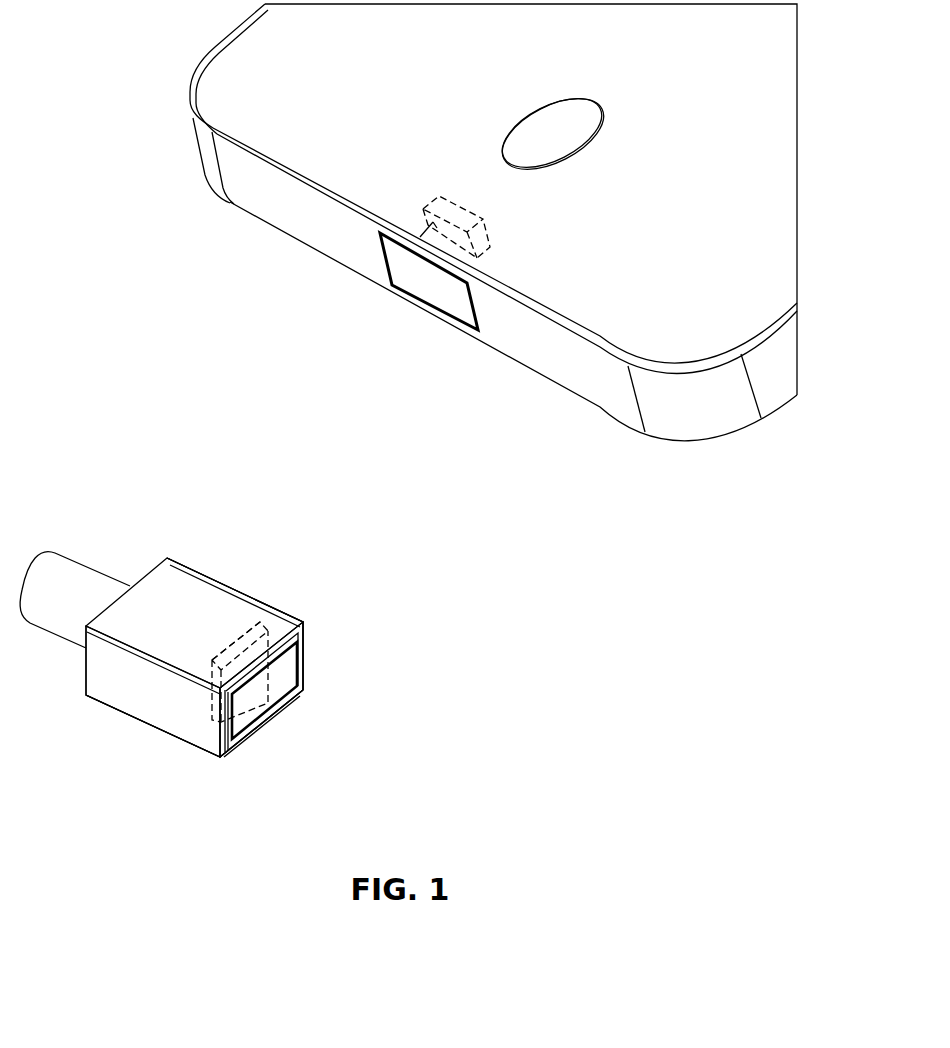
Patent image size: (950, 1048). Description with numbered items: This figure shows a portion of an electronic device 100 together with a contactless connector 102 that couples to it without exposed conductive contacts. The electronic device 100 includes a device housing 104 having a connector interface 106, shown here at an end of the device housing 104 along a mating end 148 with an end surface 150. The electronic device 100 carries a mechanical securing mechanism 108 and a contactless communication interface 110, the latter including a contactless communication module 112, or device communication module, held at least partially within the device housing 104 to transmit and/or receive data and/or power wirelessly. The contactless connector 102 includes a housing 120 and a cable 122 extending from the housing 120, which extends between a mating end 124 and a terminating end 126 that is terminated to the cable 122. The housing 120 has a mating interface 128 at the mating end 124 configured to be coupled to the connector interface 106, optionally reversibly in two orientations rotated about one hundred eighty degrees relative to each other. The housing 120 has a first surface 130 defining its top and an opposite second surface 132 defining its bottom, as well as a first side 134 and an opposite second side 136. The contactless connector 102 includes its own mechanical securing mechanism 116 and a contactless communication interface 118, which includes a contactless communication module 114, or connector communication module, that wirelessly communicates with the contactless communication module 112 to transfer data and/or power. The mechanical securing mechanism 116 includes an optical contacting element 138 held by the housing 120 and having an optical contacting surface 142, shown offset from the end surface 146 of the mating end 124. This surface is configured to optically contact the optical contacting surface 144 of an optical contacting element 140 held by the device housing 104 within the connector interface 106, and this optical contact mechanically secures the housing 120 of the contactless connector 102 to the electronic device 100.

The electronic device 100 is at (595, 418).
The contactless connector 102 is at (240, 555).
The device housing 104 is at (212, 46).
The connector interface 106 is at (446, 333).
The mechanical securing mechanism 108 is at (384, 290).
The contactless communication interface 110 is at (412, 208).
The contactless communication module 112 is at (488, 234).
The contactless communication module 114 is at (267, 623).
The mechanical securing mechanism 116 is at (227, 757).
The contactless communication interface 118 is at (248, 618).
The housing 120 is at (175, 575).
The cable 122 is at (85, 567).
The mating end 124 is at (314, 646).
The terminating end 126 is at (151, 552).
The mating interface 128 is at (303, 699).
The first surface 130 is at (196, 613).
The second surface 132 is at (153, 746).
The first side 134 is at (130, 681).
The second side 136 is at (308, 621).
The optical contacting element 138 is at (253, 708).
The optical contacting element 140 is at (470, 285).
The optical contacting surface 142 is at (272, 682).
The optical contacting surface 144 is at (422, 290).
The end surface 146 is at (277, 710).
The mating end 148 is at (498, 394).
The end surface 150 is at (557, 368).